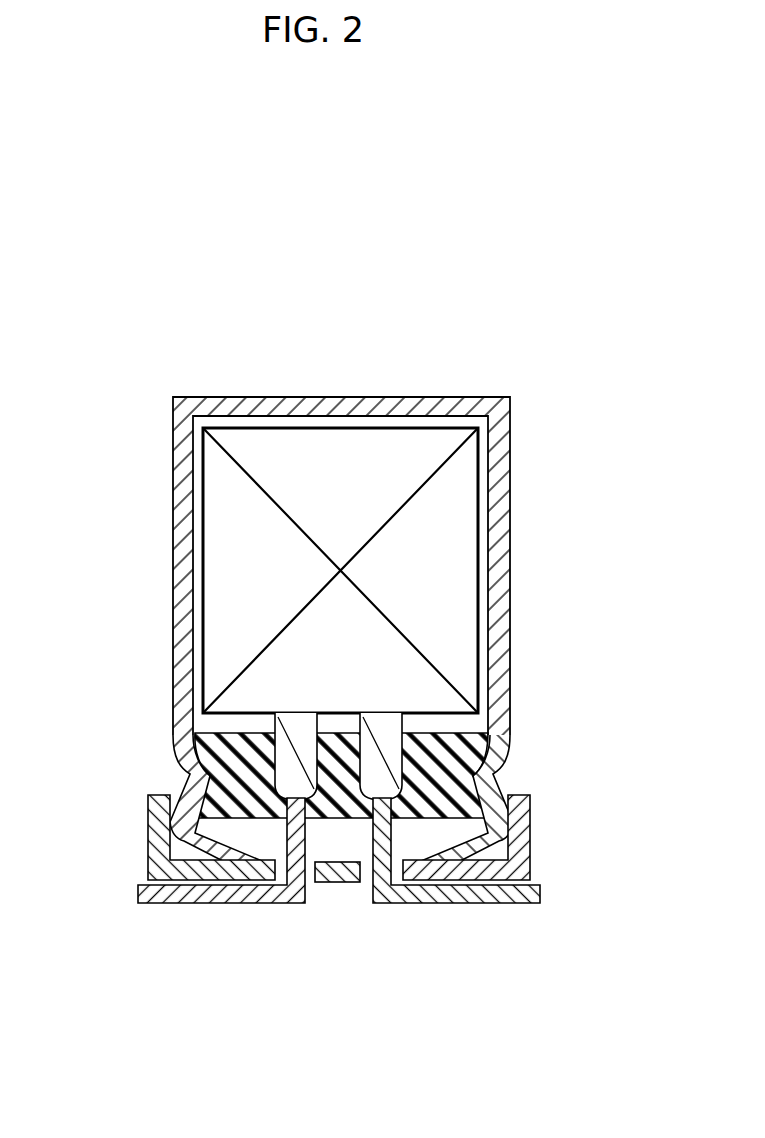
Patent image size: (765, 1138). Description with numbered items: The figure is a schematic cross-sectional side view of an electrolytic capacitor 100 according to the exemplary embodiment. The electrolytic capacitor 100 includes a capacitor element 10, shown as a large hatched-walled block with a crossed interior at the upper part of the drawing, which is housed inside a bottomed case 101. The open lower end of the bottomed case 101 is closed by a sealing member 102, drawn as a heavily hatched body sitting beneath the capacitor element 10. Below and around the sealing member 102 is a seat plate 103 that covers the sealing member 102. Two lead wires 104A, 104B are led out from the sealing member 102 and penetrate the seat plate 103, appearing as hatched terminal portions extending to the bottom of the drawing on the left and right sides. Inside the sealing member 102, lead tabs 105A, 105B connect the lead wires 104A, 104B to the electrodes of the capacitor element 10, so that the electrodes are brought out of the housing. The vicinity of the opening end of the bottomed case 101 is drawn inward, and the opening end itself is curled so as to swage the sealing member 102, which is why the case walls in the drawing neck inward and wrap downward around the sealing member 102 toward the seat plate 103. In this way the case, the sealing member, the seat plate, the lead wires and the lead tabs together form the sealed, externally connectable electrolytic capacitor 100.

The electrolytic capacitor 100 is at (398, 333).
The capacitor element 10 is at (235, 587).
The bottomed case 101 is at (498, 603).
The sealing member 102 is at (437, 771).
The seat plate 103 is at (108, 850).
The lead wire 104A is at (215, 903).
The lead wire 104B is at (460, 894).
The lead tab 105A is at (297, 769).
The lead tab 105B is at (380, 742).